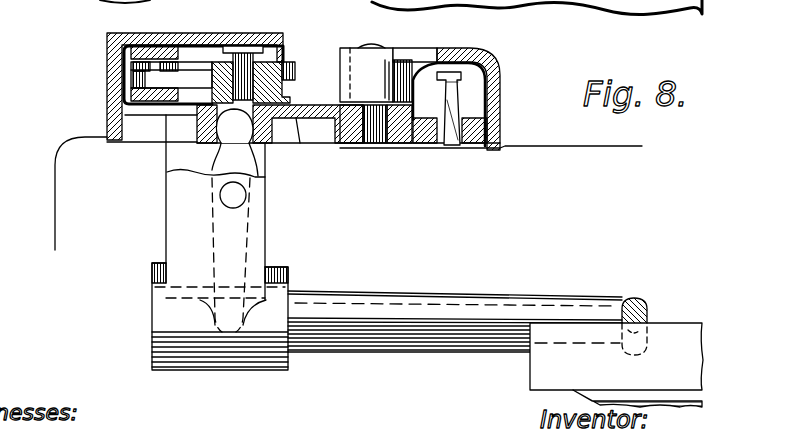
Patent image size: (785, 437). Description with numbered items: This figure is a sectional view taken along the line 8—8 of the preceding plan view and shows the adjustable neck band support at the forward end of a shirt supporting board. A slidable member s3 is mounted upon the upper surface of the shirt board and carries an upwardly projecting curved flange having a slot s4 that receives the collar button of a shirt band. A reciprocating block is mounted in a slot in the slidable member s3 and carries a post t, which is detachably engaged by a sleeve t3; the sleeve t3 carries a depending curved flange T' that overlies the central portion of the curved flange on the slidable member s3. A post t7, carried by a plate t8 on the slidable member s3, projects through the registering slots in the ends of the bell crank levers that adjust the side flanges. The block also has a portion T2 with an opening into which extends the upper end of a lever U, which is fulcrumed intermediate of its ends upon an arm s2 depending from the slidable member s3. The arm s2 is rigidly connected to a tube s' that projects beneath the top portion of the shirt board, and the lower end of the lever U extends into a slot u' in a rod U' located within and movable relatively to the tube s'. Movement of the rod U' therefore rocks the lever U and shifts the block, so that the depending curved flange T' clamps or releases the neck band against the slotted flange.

The section line 8 is at (344, 17).
The post t7 is at (286, 34).
The plate t8 is at (290, 92).
The portion of the block T2 is at (207, 124).
The lever U is at (258, 220).
The slot u' is at (198, 340).
The arm s2 is at (137, 279).
The rod U' is at (455, 302).
The tube s' is at (634, 306).
The post t is at (388, 46).
The sleeve t3 is at (410, 62).
The depending curved flange T' is at (467, 99).
The slidable member s3 is at (456, 100).
The slot s4 is at (460, 118).